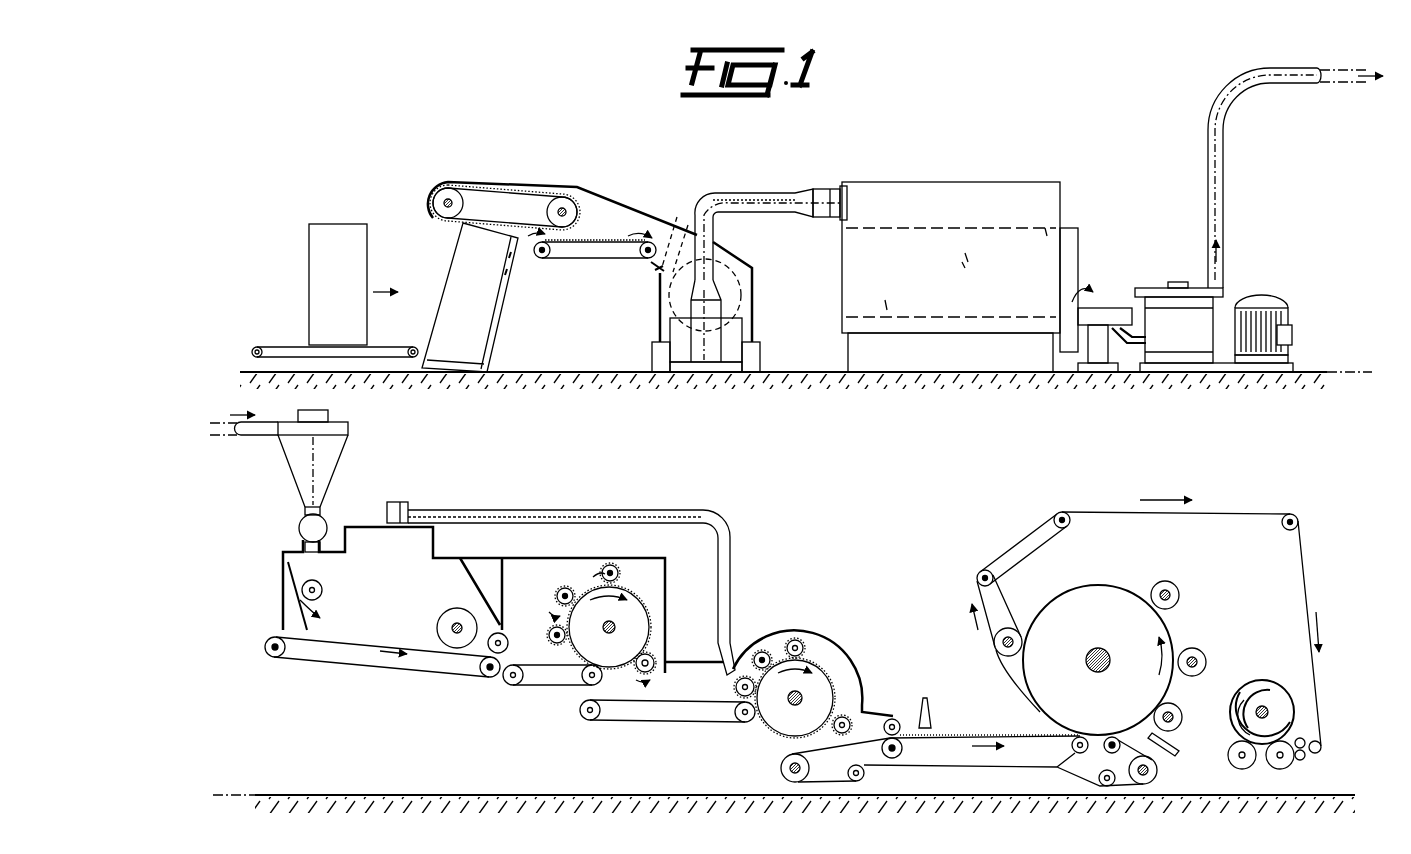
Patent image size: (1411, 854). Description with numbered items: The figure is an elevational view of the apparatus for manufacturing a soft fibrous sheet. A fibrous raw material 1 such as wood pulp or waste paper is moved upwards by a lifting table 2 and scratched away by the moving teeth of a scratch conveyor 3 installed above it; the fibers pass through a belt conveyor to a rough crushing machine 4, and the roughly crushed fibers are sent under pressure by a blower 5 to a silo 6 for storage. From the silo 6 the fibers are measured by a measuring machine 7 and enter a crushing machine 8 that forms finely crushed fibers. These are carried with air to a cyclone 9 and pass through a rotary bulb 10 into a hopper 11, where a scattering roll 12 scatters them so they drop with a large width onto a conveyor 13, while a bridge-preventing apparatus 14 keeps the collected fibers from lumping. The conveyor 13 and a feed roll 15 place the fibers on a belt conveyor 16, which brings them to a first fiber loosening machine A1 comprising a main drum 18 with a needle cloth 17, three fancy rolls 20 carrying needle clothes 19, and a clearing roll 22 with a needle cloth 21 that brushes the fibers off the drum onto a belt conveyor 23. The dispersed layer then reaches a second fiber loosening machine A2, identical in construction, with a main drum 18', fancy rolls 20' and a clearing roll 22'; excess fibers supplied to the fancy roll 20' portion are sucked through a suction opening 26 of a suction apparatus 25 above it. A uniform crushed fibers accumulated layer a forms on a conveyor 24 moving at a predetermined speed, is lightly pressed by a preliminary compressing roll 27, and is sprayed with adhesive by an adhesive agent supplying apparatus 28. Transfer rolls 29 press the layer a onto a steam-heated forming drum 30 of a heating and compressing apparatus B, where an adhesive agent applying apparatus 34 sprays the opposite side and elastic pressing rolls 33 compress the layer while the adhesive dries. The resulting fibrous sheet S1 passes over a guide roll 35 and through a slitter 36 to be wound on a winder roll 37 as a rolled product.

The fibrous raw material 1 is at (448, 280).
The lifting table 2 is at (498, 318).
The scratch conveyor 3 is at (489, 188).
The rough crushing machine 4 is at (662, 266).
The blower 5 is at (765, 200).
The silo 6 is at (944, 197).
The measuring machine 7 is at (1107, 308).
The crushing machine 8 is at (1160, 293).
The cyclone 9 is at (330, 450).
The rotary bulb 10 is at (318, 525).
The hopper 11 is at (391, 603).
The scattering roll 12 is at (301, 588).
The conveyor 13 is at (372, 674).
The bridge-preventing apparatus 14 is at (452, 645).
The feed roll 15 is at (496, 653).
The belt conveyor 16 is at (531, 686).
The needle cloth 17 is at (642, 606).
The main drum 18 is at (638, 627).
The main drum 18' is at (813, 680).
The needle clothes 19 is at (568, 583).
The fancy rolls 20 is at (573, 585).
The fancy rolls 20' is at (778, 634).
The needle cloth 21 is at (652, 660).
The clearing roll 22 is at (667, 718).
The clearing roll 22' is at (865, 691).
The belt conveyor 23 is at (722, 704).
The conveyor 24 is at (960, 734).
The suction apparatus 25 is at (735, 548).
The suction opening 26 is at (730, 674).
The preliminary compressing roll 27 is at (893, 718).
The adhesive agent supplying apparatus 28 is at (930, 698).
The transfer rolls 29 is at (1110, 753).
The forming drum 30 is at (1122, 600).
The pressing rolls 33 is at (1195, 648).
The adhesive agent applying apparatus 34 is at (1168, 754).
The guide roll 35 is at (1010, 629).
The slitter 36 is at (1303, 761).
The winder roll 37 is at (1262, 681).
The first fiber loosening machine A1 is at (594, 555).
The second fiber loosening machine A2 is at (816, 624).
The heating and compressing apparatus B is at (1088, 581).
The crushed fibers accumulated layer a is at (999, 734).
The fibrous sheet S1 is at (1229, 717).